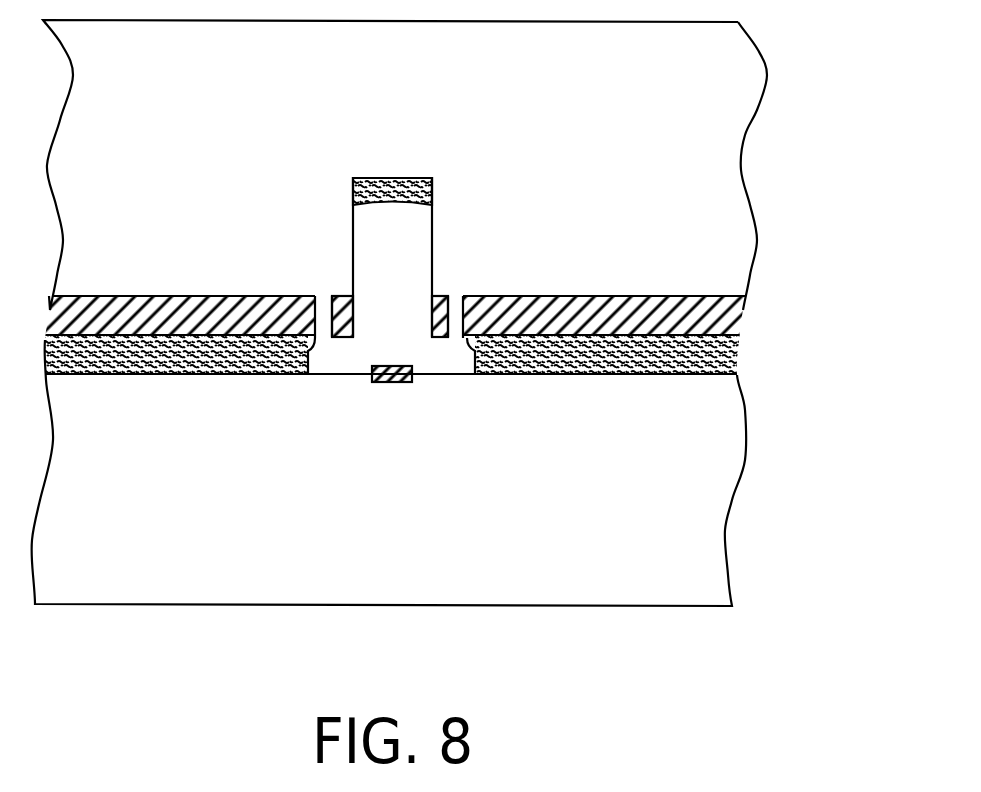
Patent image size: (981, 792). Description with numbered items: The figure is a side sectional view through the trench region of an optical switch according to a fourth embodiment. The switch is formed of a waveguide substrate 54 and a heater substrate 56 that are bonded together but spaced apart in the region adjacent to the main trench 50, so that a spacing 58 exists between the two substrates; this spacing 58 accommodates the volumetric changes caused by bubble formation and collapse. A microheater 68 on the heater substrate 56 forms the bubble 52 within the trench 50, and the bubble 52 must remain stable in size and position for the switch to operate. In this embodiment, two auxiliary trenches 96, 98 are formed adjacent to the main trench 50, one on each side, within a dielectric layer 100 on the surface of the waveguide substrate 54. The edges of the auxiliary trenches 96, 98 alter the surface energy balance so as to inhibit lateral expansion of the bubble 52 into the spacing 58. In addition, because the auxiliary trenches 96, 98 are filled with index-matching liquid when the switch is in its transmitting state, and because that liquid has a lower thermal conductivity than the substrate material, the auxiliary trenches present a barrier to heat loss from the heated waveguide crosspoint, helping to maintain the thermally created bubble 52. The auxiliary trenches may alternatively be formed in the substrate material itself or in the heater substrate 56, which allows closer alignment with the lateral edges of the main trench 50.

The trench 50 is at (422, 178).
The bubble 52 is at (422, 249).
The waveguide substrate 54 is at (743, 128).
The heater substrate 56 is at (735, 448).
The spacing 58 is at (737, 358).
The microheater 68 is at (393, 383).
The auxiliary trench 96 is at (320, 298).
The auxiliary trench 98 is at (463, 298).
The dielectric layer 100 is at (745, 300).